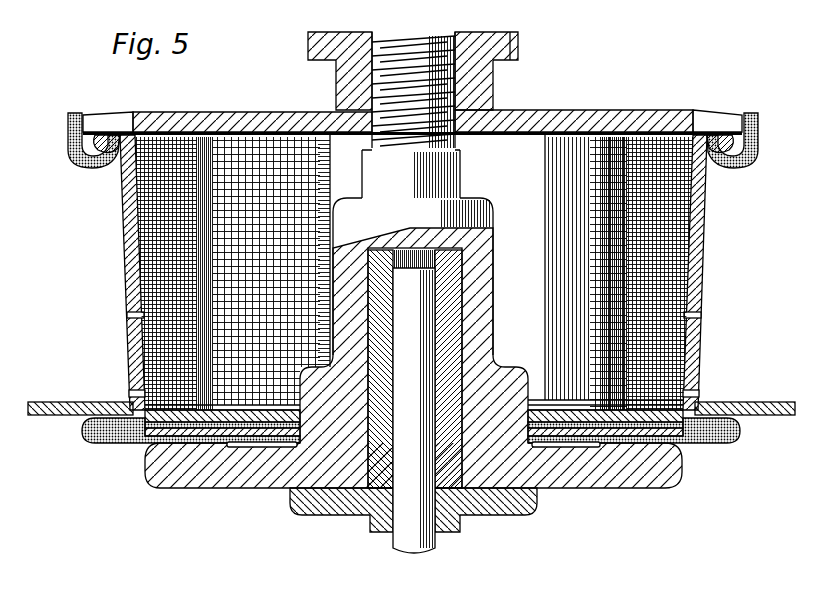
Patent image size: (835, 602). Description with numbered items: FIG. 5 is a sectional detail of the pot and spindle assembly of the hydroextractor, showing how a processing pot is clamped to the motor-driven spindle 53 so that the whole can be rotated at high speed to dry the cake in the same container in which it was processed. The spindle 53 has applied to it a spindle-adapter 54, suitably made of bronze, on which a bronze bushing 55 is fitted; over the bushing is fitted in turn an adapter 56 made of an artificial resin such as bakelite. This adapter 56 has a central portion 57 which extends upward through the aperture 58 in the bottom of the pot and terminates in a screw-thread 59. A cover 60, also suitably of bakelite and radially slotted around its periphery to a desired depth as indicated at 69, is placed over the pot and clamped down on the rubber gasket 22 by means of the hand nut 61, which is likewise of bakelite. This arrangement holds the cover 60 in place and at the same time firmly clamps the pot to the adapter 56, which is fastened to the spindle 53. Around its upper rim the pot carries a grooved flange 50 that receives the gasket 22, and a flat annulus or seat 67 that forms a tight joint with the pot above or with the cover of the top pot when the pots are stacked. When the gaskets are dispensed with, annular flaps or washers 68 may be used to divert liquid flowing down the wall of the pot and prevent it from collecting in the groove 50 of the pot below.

The rubber gasket 22 is at (455, 272).
The grooved flange 50 is at (427, 168).
The spindle 53 is at (391, 423).
The spindle-adapter 54 is at (413, 522).
The bronze bushing 55 is at (449, 368).
The adapter 56 is at (418, 486).
The central portion 57 is at (414, 343).
The aperture 58 is at (413, 492).
The screw-thread 59 is at (413, 105).
The cover 60 is at (412, 109).
The hand nut 61 is at (434, 71).
The flat annulus 67 is at (422, 123).
The annular flap 68 is at (411, 392).
The radial slot 69 is at (717, 107).